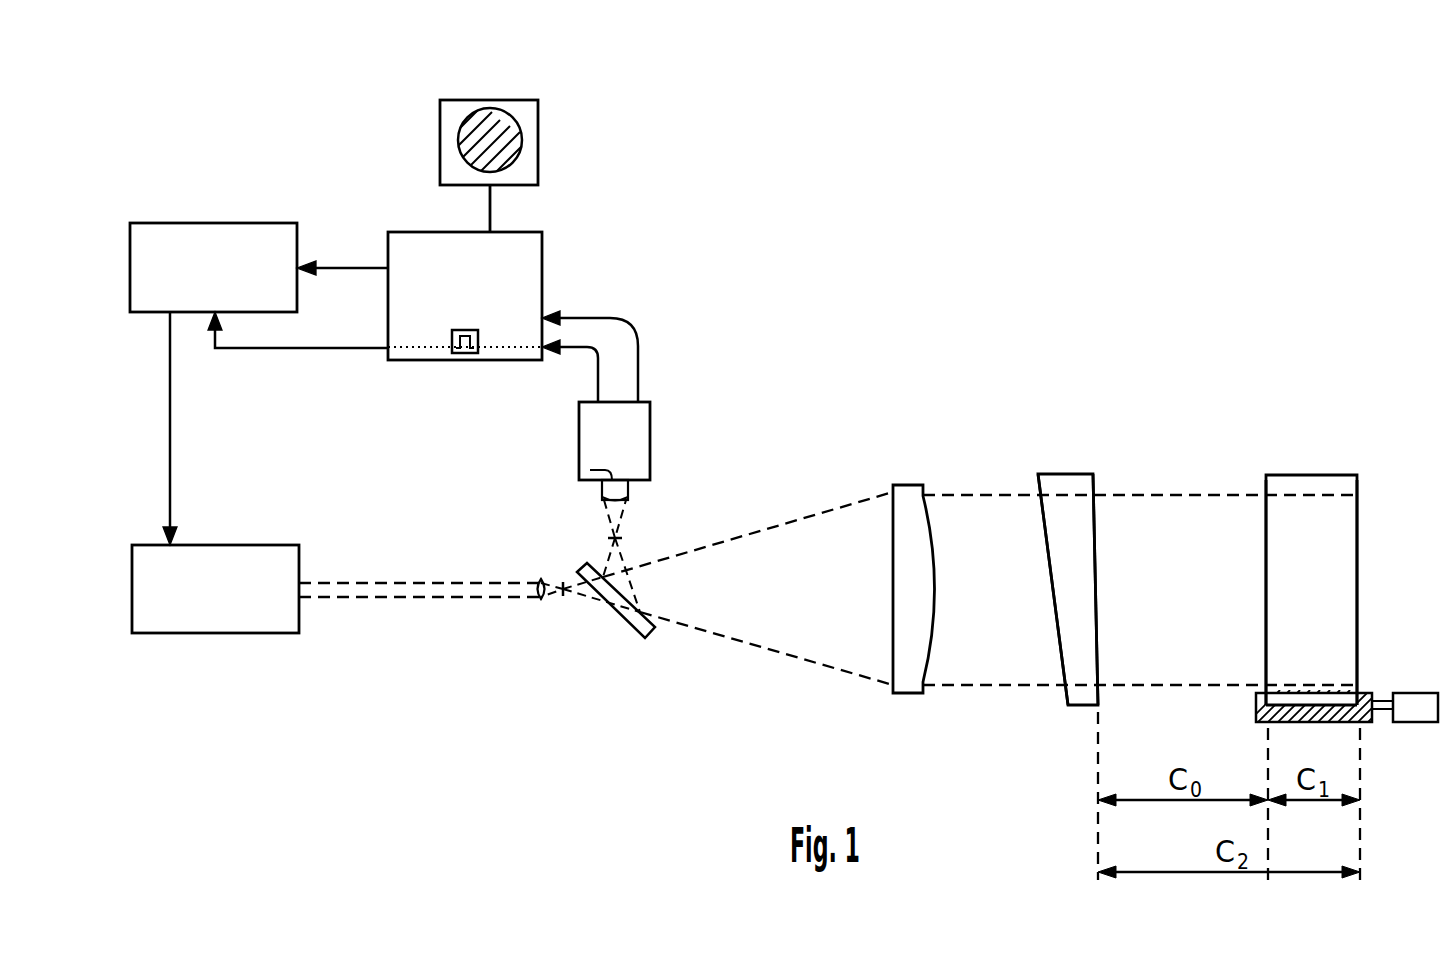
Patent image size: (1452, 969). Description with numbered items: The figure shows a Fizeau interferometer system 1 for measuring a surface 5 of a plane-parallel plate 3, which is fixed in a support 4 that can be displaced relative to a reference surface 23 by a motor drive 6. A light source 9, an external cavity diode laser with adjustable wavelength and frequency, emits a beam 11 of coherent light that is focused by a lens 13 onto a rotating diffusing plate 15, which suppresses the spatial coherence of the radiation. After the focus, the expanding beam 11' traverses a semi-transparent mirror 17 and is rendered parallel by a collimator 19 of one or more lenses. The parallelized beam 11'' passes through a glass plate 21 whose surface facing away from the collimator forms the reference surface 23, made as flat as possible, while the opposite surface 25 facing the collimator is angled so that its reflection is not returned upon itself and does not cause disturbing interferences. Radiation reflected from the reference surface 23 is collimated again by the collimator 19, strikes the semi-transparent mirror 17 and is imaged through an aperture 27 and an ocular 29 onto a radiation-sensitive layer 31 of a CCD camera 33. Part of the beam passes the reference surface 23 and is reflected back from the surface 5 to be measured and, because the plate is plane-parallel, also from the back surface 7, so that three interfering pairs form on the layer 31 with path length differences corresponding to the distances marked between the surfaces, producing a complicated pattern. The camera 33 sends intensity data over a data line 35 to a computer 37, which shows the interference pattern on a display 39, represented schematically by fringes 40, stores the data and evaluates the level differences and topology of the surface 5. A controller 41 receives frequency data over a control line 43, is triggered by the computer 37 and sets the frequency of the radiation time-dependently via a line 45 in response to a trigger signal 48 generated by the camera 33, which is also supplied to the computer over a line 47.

The Fizeau interferometer system 1 is at (978, 254).
The plane-parallel plate 3 is at (1308, 475).
The support 4 is at (1368, 720).
The surface to be measured 5 is at (1266, 510).
The motor drive 6 is at (1405, 693).
The back surface 7 is at (1357, 510).
The light source 9 is at (257, 633).
The beam 11 is at (419, 550).
The expanding beam 11' is at (748, 562).
The parallelized beam 11'' is at (1140, 552).
The lens 13 is at (540, 600).
The diffusing plate 15 is at (563, 597).
The semi-transparent mirror 17 is at (645, 638).
The collimator 19 is at (908, 693).
The glass plate 21 is at (1065, 474).
The reference surface 23 is at (1097, 510).
The surface of the plate 25 is at (1063, 665).
The aperture 27 is at (630, 538).
The ocular 29 is at (628, 497).
The radiation-sensitive layer 31 is at (590, 470).
The CCD camera 33 is at (650, 430).
The data line 35 is at (637, 340).
The computer 37 is at (542, 250).
The display 39 is at (538, 122).
The fringes 40 is at (490, 115).
The controller 41 is at (223, 223).
The control line 43 is at (355, 268).
The line 45 is at (170, 438).
The line 47 is at (312, 349).
The trigger signal 48 is at (462, 360).